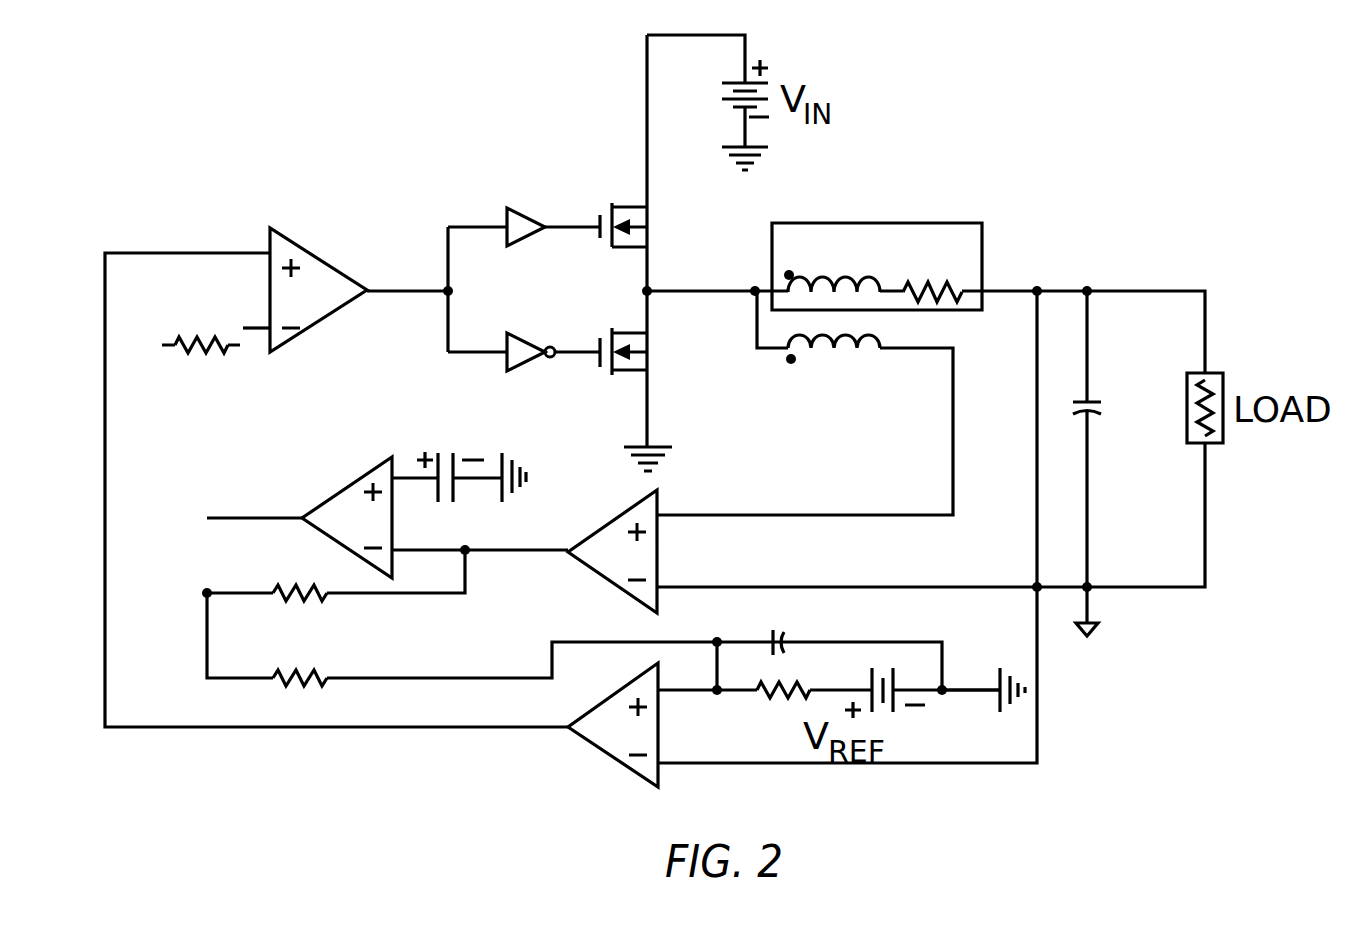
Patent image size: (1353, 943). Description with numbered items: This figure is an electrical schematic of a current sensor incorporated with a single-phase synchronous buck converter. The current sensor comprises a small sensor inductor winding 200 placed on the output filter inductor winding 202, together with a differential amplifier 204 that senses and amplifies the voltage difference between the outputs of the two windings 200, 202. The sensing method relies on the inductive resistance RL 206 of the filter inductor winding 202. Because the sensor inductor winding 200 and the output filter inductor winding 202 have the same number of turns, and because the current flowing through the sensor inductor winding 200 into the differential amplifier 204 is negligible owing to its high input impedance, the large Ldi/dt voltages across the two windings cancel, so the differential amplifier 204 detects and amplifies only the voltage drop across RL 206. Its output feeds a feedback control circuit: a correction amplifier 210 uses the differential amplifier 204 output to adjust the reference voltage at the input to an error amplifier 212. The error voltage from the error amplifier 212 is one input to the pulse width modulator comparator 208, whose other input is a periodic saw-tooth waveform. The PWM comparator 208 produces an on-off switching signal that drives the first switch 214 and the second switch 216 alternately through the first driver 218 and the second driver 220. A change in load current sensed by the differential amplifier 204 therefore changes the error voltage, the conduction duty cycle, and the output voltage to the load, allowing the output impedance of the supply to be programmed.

The sensor inductor winding 200 is at (823, 352).
The output filter inductor winding 202 is at (818, 280).
The differential amplifier 204 is at (608, 518).
The inductive resistance RL 206 is at (953, 290).
The pulse width modulator (PWM) comparator 208 is at (313, 325).
The correction amplifier 210 is at (348, 482).
The error amplifier 212 is at (610, 758).
The switch Q1 214 is at (642, 215).
The switch Q2 216 is at (640, 345).
The driver D1 218 is at (518, 210).
The driver D2 220 is at (523, 332).